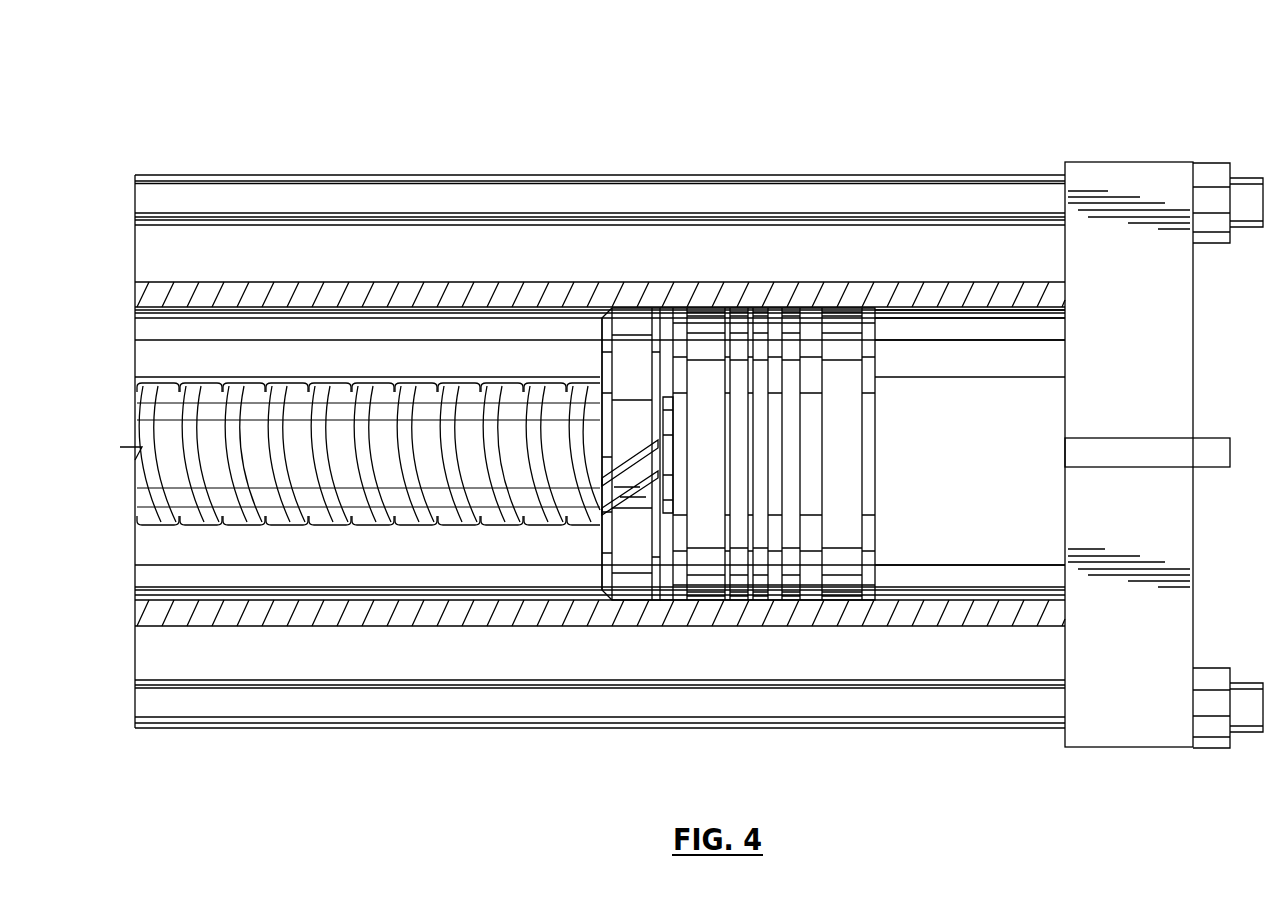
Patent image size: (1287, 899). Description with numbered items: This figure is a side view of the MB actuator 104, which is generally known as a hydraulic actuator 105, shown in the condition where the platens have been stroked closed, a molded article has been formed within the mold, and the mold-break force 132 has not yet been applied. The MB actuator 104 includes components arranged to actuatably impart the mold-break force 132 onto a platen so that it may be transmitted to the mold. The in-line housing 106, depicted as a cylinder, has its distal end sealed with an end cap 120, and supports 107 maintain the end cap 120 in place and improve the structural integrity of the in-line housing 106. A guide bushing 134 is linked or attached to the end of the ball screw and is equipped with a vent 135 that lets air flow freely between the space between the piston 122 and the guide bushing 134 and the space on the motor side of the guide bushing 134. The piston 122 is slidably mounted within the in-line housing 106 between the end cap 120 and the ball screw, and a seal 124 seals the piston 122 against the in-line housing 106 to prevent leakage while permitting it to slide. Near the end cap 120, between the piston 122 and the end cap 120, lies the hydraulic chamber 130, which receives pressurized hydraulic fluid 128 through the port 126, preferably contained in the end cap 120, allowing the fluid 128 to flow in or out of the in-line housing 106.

The MB actuator 104 is at (772, 159).
The hydraulic actuator 105 is at (561, 123).
The in-line housing 106 is at (318, 292).
The supports 107 is at (398, 190).
The end cap 120 is at (1172, 503).
The piston 122 is at (706, 330).
The seal 124 is at (867, 594).
The port 126 is at (1212, 452).
The pressurized hydraulic fluid 128 is at (957, 573).
The hydraulic chamber 130 is at (1023, 338).
The mold-break force 132 is at (96, 440).
The guide bushing 134 is at (636, 325).
The vent 135 is at (627, 473).